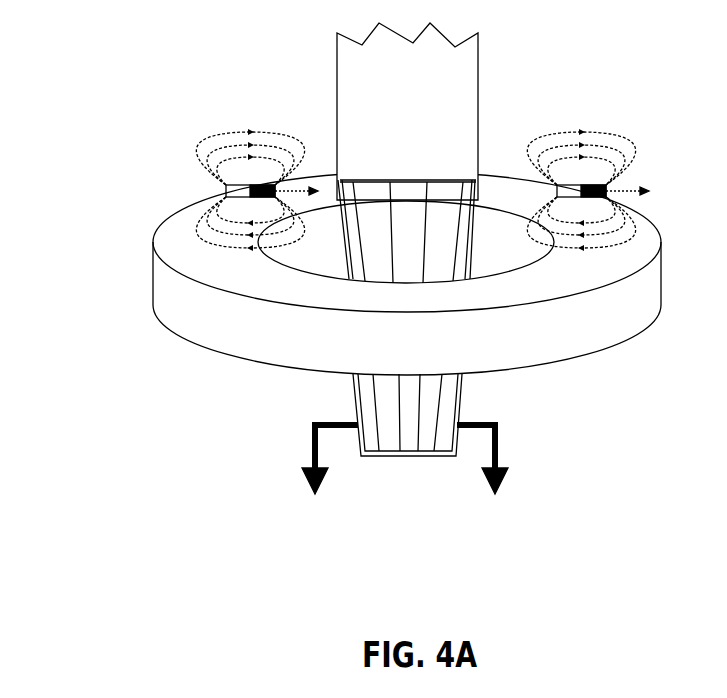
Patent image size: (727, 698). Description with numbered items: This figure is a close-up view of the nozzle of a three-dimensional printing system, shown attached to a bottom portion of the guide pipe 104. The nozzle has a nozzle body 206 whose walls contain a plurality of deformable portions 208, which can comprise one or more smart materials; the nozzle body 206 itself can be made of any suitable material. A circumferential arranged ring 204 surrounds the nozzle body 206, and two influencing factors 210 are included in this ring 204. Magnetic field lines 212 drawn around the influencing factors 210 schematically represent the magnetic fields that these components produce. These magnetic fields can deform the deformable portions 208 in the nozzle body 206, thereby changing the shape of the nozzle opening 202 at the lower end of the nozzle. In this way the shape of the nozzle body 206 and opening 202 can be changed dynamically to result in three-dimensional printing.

The guide pipe 104 is at (450, 75).
The nozzle opening 202 is at (414, 482).
The circumferential arranged ring 204 is at (167, 285).
The nozzle body 206 is at (372, 188).
The deformable portions 208 is at (430, 233).
The influencing factors 210 is at (256, 198).
The magnetic field lines 212 is at (218, 150).